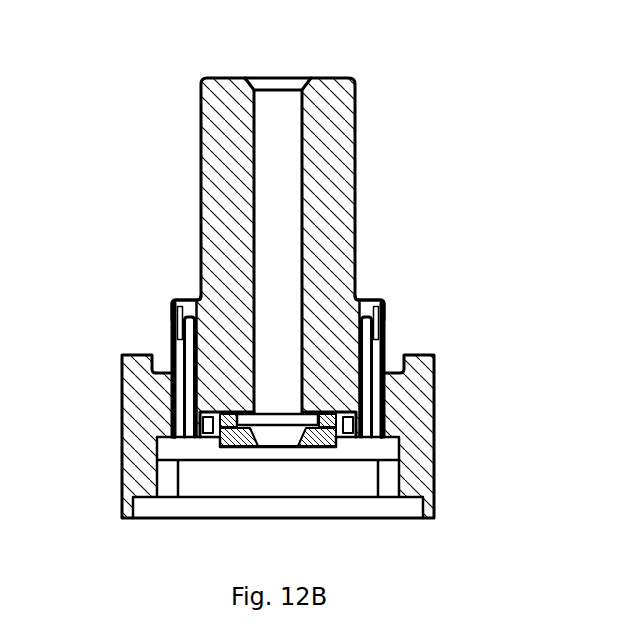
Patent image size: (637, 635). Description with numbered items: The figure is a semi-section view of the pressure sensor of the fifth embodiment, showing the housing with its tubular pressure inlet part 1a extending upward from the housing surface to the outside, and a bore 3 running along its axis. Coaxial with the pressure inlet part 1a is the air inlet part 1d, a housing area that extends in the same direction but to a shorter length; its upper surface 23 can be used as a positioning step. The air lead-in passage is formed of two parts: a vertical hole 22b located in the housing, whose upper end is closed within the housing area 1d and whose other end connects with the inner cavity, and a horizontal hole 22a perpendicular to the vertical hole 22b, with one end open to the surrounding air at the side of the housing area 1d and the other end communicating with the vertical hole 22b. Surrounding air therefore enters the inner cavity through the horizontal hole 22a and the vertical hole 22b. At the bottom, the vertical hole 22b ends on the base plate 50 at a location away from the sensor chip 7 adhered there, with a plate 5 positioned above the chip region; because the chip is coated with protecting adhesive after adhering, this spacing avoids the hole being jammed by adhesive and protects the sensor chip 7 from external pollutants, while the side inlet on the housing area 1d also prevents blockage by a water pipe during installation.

The bore / through hole 3 is at (275, 112).
The tubular pressure inlet part 1a is at (327, 118).
The air inlet part 1d is at (170, 303).
The upper surface of the housing area 23 is at (370, 298).
The horizontal hole 22a is at (170, 332).
The vertical hole 22b is at (177, 402).
The plate 5 is at (330, 418).
The sensor chip 7 is at (336, 432).
The base plate 50 is at (203, 447).